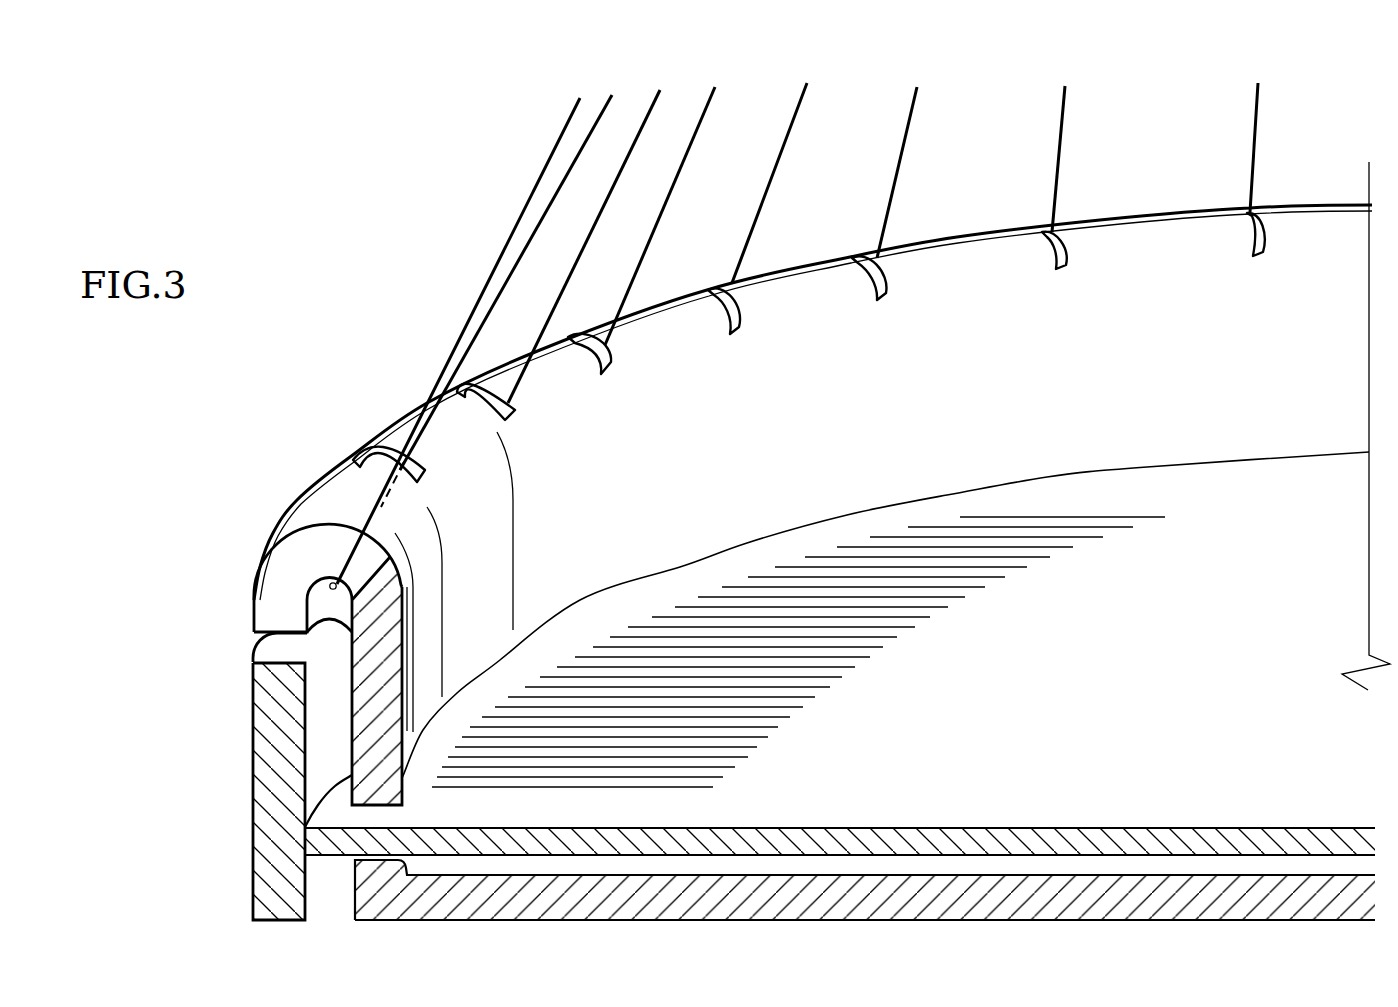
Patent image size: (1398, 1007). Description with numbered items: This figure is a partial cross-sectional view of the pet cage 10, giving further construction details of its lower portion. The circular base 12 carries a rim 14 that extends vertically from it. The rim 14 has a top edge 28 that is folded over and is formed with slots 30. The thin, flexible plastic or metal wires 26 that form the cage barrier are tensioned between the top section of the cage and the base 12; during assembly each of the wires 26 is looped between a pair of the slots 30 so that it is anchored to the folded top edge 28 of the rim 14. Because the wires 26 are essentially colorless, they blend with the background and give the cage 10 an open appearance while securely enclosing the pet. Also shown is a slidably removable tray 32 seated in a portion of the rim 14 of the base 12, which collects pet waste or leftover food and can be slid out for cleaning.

The pet cage 10 is at (303, 264).
The circular base 12 is at (352, 920).
The rim 14 is at (370, 733).
The wires 26 is at (660, 227).
The top edge 28 is at (353, 497).
The slots 30 is at (470, 387).
The slidably removable tray 32 is at (253, 688).